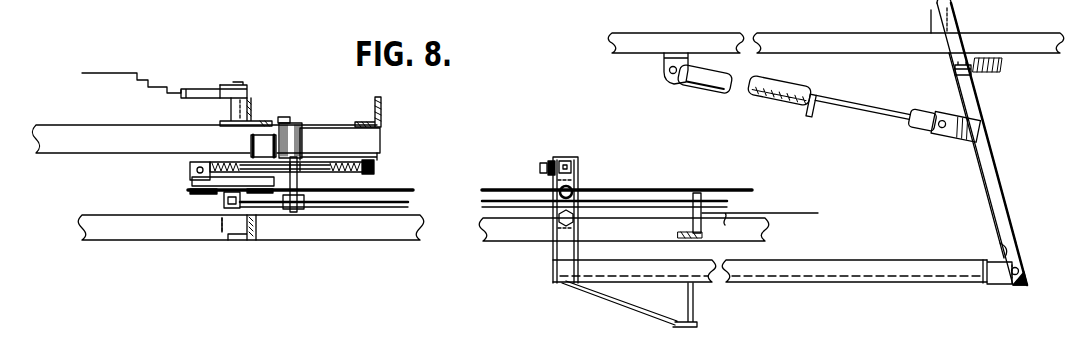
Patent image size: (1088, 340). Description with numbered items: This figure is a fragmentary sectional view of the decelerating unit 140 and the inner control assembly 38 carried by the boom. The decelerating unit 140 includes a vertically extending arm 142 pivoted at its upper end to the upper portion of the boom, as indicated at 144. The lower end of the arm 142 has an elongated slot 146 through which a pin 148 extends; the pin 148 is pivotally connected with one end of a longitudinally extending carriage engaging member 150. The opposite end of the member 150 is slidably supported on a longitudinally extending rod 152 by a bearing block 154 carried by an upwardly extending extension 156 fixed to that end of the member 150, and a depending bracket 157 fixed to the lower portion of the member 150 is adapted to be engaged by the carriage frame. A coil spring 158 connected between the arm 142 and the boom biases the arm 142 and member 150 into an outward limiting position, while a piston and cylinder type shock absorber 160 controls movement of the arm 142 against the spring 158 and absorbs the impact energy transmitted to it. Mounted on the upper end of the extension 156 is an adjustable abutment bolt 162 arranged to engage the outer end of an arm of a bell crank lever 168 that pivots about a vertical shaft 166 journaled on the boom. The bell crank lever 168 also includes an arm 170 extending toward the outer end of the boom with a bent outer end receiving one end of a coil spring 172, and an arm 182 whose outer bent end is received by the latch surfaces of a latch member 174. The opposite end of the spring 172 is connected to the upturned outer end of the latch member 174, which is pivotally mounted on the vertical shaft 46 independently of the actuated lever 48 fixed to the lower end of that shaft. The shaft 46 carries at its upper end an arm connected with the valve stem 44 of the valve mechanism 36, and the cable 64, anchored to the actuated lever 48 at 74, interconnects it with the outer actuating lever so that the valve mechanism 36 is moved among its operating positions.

The valve mechanism 36 is at (137, 52).
The valve stem 44 is at (187, 92).
The vertical shaft 46 is at (232, 110).
The arm 182 is at (236, 148).
The vertical shaft 166 is at (288, 125).
The arm 170 is at (368, 154).
The latch member 174 is at (190, 170).
The coil spring 172 is at (316, 160).
The bell crank lever 168 is at (366, 165).
The actuated lever 48 is at (191, 182).
The cable anchor 74 is at (203, 194).
The cable 64 is at (389, 192).
The inner control assembly 38 is at (444, 110).
The carriage engaging member 150 is at (818, 272).
The bearing block 154 is at (568, 200).
The rod 152 is at (502, 198).
The adjustable abutment bolt 162 is at (541, 164).
The extension 156 is at (572, 170).
The depending bracket 157 is at (655, 320).
The shock absorber 160 is at (786, 100).
The decelerating unit 140 is at (1002, 157).
The pivot 144 is at (931, 10).
The vertically extending arm 142 is at (983, 174).
The coil spring 158 is at (993, 70).
The elongated slot 146 is at (999, 249).
The pin 148 is at (1013, 276).